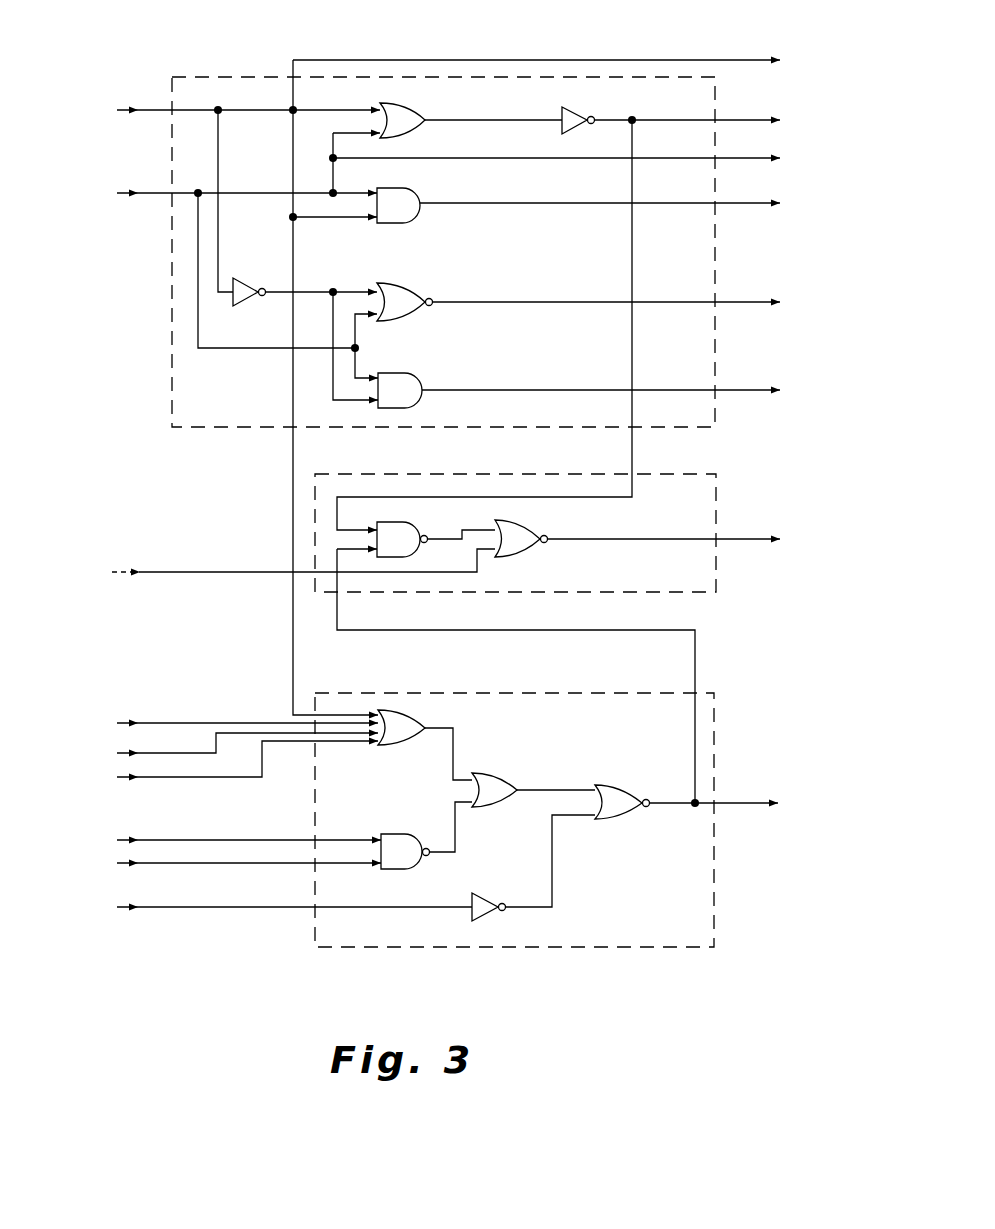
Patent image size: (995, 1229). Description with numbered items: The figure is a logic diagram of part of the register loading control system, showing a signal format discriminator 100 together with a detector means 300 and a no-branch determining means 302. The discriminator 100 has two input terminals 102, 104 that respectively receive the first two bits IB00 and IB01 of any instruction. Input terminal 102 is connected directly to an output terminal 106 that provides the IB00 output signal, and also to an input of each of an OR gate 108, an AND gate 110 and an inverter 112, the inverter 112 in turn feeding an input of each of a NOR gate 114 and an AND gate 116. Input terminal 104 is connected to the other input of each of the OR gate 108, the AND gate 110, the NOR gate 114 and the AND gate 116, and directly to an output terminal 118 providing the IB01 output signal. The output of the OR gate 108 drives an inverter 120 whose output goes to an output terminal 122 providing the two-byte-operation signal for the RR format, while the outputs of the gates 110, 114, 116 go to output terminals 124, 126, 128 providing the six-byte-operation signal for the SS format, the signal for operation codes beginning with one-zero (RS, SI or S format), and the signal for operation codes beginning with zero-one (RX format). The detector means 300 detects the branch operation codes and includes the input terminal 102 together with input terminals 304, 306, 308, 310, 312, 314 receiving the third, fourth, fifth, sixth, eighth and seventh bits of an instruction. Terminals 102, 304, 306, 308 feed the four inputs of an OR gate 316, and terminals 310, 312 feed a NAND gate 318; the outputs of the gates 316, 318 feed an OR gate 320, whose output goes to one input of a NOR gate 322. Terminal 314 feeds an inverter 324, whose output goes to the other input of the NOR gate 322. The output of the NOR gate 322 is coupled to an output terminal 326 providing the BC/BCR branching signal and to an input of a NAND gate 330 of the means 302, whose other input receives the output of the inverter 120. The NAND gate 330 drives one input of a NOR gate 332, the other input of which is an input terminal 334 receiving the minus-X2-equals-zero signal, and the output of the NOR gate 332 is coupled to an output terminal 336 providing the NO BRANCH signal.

The signal format discriminator 100 is at (212, 76).
The input terminal 102 is at (140, 108).
The input terminal 104 is at (140, 191).
The output terminal 106 is at (777, 56).
The OR gate 108 is at (412, 104).
The AND gate 110 is at (412, 188).
The inverter 112 is at (245, 278).
The NOR gate 114 is at (411, 284).
The AND gate 116 is at (411, 373).
The output terminal 118 is at (777, 155).
The inverter 120 is at (580, 108).
The output terminal 122 is at (777, 116).
The output terminal 124 is at (776, 200).
The output terminal 126 is at (776, 298).
The output terminal 128 is at (776, 387).
The detector means 300 is at (716, 762).
The means for determining whether the R2 field contains all zeros 302 is at (719, 503).
The input terminal 304 is at (139, 720).
The input terminal 306 is at (139, 750).
The input terminal 308 is at (146, 766).
The input terminal 310 is at (139, 837).
The input terminal 312 is at (139, 860).
The input terminal 314 is at (139, 904).
The OR gate 316 is at (420, 717).
The NAND gate 318 is at (404, 834).
The OR gate 320 is at (505, 774).
The NOR gate 322 is at (612, 785).
The inverter 324 is at (484, 893).
The output terminal 326 is at (775, 800).
The NAND gate 330 is at (411, 522).
The NOR gate 332 is at (536, 524).
The input terminal 334 is at (140, 552).
The output terminal 336 is at (777, 537).